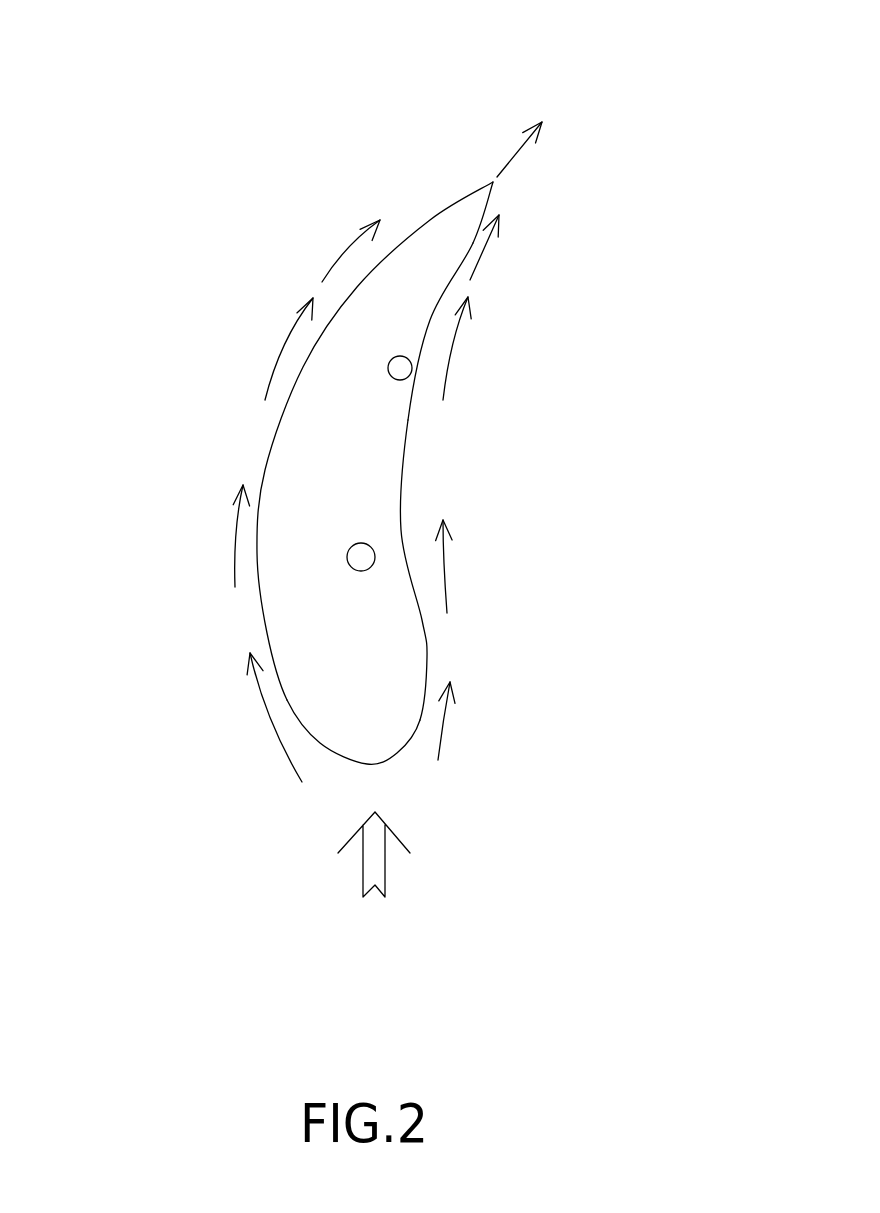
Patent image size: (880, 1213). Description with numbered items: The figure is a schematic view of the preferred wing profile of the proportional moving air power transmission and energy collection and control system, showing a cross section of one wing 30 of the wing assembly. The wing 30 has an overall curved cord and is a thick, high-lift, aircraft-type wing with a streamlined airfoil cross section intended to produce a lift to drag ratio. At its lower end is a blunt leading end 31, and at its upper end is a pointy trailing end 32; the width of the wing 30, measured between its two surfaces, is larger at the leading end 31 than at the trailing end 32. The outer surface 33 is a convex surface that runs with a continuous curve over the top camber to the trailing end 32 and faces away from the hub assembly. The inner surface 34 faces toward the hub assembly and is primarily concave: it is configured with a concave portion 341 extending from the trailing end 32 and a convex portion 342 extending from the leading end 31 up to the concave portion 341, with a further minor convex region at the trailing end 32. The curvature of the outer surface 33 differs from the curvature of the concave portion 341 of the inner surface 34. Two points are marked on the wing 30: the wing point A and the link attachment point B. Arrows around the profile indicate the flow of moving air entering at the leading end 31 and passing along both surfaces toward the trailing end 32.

The wing 30 is at (420, 439).
The leading end 31 is at (403, 763).
The trailing end 32 is at (485, 175).
The outer surface 33 is at (227, 540).
The inner surface 34 is at (547, 478).
The concave portion 341 is at (410, 463).
The convex portion 342 is at (427, 660).
The wing point A is at (375, 553).
The link attachment point B is at (408, 358).